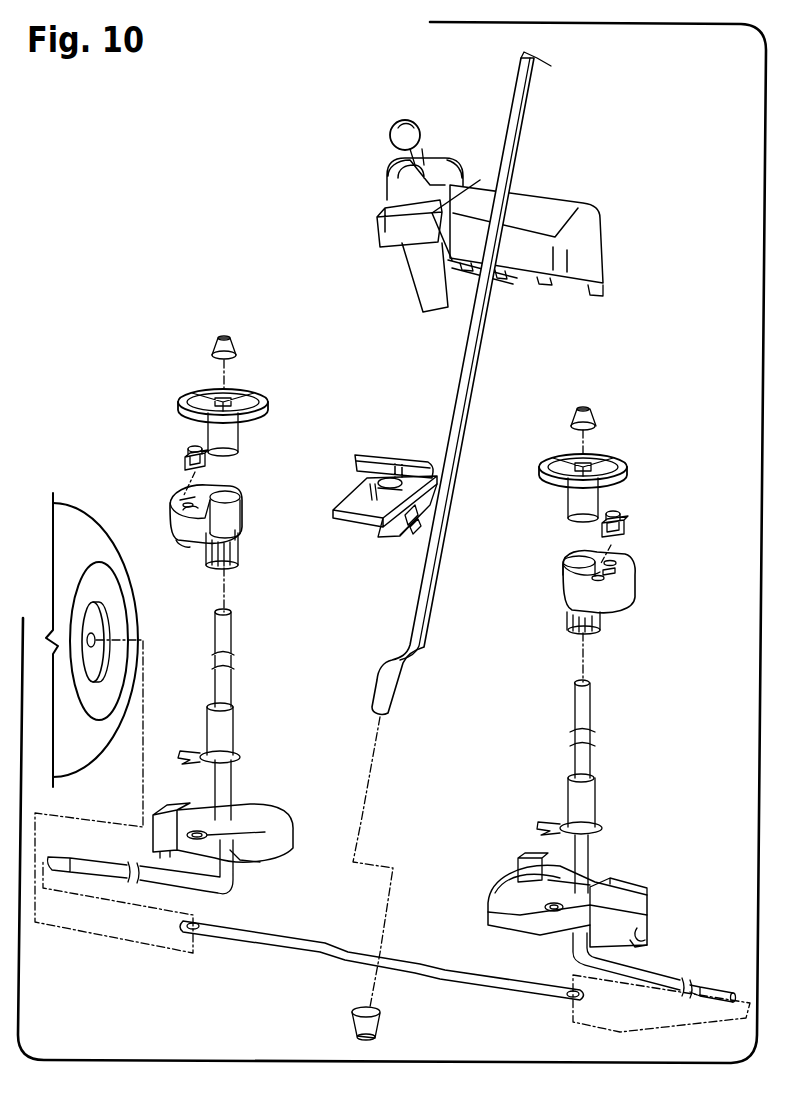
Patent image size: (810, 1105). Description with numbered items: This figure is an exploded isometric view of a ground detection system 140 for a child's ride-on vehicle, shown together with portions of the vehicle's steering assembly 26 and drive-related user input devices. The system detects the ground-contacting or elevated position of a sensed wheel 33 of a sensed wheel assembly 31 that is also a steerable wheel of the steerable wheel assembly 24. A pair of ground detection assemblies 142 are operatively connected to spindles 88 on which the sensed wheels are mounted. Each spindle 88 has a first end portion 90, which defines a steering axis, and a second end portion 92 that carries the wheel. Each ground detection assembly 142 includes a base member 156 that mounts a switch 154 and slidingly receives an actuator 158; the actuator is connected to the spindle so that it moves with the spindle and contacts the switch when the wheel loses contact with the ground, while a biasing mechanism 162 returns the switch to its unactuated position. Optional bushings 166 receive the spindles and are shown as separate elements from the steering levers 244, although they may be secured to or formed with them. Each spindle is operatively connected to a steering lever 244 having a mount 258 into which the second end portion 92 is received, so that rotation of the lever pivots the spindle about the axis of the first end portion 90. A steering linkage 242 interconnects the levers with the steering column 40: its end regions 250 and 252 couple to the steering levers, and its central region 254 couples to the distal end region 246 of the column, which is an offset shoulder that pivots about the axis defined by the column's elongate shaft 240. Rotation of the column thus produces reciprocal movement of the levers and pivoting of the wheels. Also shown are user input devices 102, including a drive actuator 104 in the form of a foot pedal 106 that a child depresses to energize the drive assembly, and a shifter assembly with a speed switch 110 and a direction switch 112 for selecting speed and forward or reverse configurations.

The steerable wheel assembly 24 is at (100, 500).
The steering assembly 26 is at (502, 300).
The sensed wheel assembly 31 is at (136, 570).
The sensed wheel 33 is at (82, 753).
The steering column 40 is at (486, 352).
The spindle 88 is at (234, 691).
The first end portion 90 is at (596, 706).
The second end portion 92 is at (663, 965).
The user input device 102 is at (348, 188).
The drive actuator 104 is at (362, 480).
The foot pedal 106 is at (381, 452).
The speed switch 110 is at (380, 158).
The direction switch 112 is at (388, 137).
The ground detection system 140 is at (534, 524).
The ground detection assembly 142 is at (568, 532).
The switch 154 is at (187, 462).
The base member 156 is at (178, 508).
The actuator 158 is at (251, 396).
The biasing mechanism 162 is at (186, 446).
The bushing 166 is at (234, 728).
The elongate shaft 240 is at (472, 396).
The steering linkage 242 is at (296, 934).
The steering lever 244 is at (242, 800).
The distal end region 246 is at (406, 664).
The end region 250 is at (208, 935).
The end region 252 is at (563, 1000).
The central region 254 is at (381, 956).
The mount 258 is at (643, 932).